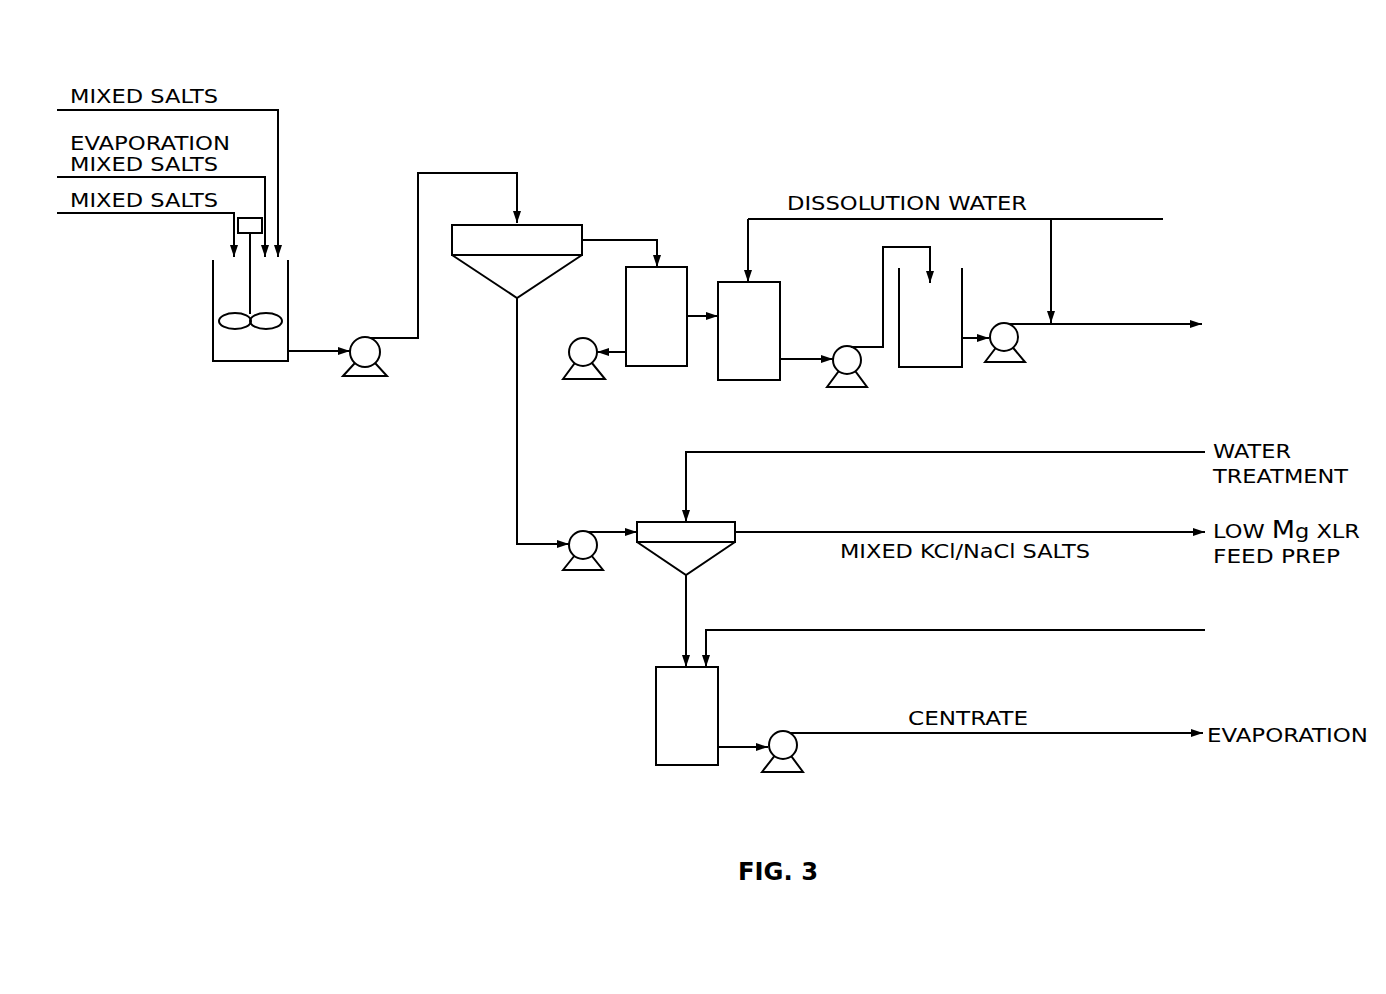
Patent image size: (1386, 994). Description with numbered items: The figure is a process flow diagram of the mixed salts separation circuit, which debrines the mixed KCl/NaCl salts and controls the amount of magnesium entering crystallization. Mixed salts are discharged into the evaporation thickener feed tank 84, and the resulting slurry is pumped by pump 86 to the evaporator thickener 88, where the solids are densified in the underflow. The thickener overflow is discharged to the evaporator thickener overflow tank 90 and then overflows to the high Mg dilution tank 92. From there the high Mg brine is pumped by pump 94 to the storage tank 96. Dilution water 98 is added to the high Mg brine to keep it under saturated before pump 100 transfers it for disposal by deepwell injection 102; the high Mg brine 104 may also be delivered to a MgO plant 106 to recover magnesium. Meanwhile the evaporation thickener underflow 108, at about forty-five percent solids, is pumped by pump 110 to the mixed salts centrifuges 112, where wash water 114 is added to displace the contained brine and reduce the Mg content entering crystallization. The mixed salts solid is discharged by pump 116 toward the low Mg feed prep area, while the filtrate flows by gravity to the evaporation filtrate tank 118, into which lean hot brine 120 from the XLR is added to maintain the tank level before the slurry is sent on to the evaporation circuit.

The evaporation thickener feed tank 84 is at (278, 307).
The pump 86 is at (375, 353).
The evaporator thickener 88 is at (547, 232).
The evaporator thickener overflow tank 90 is at (642, 328).
The high Mg dilution tank 92 is at (734, 345).
The pump 94 is at (845, 348).
The storage tank 96 is at (952, 282).
The dilution water 98 is at (1083, 219).
The pump 100 is at (1007, 327).
The deepwell injection 102 is at (1278, 358).
The high Mg brine 104 is at (1175, 326).
The MgO plant 106 is at (1323, 252).
The evaporation thickener underflow 108 is at (515, 498).
The pump 110 is at (582, 540).
The mixed salts centrifuges 112 is at (658, 527).
The wash water 114 is at (750, 450).
The pump 116 is at (783, 738).
The evaporation filtrate tank 118 is at (665, 730).
The lean hot brine 120 is at (1068, 631).